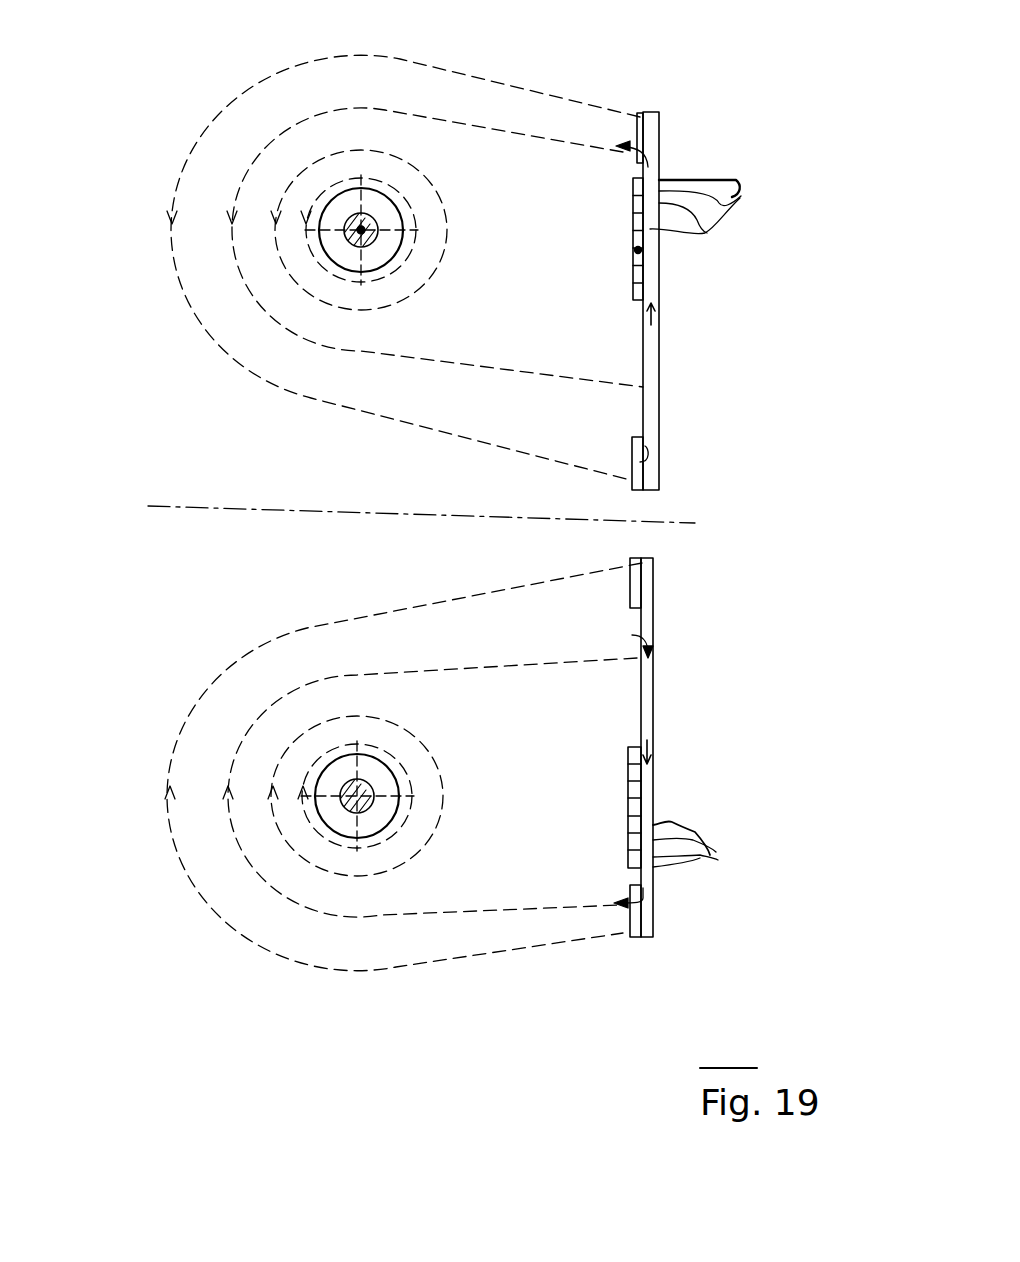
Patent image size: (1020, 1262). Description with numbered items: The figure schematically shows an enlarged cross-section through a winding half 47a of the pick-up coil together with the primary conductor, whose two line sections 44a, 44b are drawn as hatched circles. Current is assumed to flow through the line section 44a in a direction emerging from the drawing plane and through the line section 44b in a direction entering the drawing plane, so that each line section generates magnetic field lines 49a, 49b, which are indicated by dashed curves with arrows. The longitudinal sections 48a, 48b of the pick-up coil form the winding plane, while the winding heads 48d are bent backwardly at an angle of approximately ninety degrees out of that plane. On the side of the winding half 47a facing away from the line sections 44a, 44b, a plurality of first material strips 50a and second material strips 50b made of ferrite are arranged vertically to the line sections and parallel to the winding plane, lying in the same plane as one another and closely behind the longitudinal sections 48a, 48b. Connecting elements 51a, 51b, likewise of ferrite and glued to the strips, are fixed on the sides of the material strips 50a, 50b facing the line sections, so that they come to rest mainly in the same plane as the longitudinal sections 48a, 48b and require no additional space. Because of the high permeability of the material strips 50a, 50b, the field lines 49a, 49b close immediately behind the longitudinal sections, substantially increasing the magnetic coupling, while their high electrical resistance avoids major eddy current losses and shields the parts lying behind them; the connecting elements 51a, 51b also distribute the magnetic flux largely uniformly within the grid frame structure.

The line section 44a is at (361, 230).
The line section 44b is at (357, 796).
The winding half 47a is at (640, 252).
The longitudinal sections 48a is at (637, 283).
The longitudinal sections 48b is at (637, 793).
The winding heads 48d is at (703, 187).
The magnetic field lines 49a is at (257, 303).
The magnetic field lines 49b is at (242, 847).
The first material strips 50a is at (652, 412).
The second material strips 50b is at (652, 708).
The connecting elements 51a is at (638, 128).
The connecting elements 51b is at (637, 585).